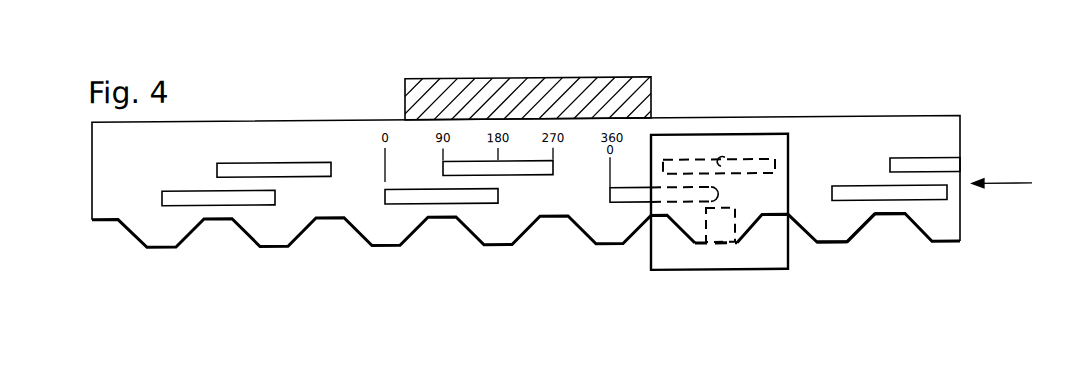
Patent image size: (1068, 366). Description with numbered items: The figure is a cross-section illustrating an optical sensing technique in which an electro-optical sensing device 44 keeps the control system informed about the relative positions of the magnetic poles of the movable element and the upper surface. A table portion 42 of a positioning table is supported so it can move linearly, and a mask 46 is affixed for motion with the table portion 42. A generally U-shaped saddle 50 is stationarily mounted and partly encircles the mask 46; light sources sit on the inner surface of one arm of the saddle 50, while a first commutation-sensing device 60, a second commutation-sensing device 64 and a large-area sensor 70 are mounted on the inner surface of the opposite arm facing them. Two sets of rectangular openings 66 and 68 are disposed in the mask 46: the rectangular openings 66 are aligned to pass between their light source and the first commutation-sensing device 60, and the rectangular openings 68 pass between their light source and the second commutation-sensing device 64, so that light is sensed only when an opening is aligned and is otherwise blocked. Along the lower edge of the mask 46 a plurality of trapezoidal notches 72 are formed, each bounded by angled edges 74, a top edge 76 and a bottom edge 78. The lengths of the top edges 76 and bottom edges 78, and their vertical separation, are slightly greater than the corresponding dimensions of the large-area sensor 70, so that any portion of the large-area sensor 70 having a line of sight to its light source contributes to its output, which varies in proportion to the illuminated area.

The table portion 42 is at (550, 91).
The electro-optical sensing device 44 is at (1018, 183).
The mask 46 is at (895, 135).
The saddle 50 is at (777, 266).
The first commutation-sensing device 60 is at (725, 163).
The second commutation-sensing device 64 is at (716, 200).
The rectangular openings 66 is at (198, 172).
The rectangular openings 68 is at (140, 202).
The large-area sensor 70 is at (720, 238).
The trapezoidal notches 72 is at (247, 237).
The angled edges 74 is at (858, 242).
The top edges 76 is at (893, 223).
The bottom edges 78 is at (833, 250).